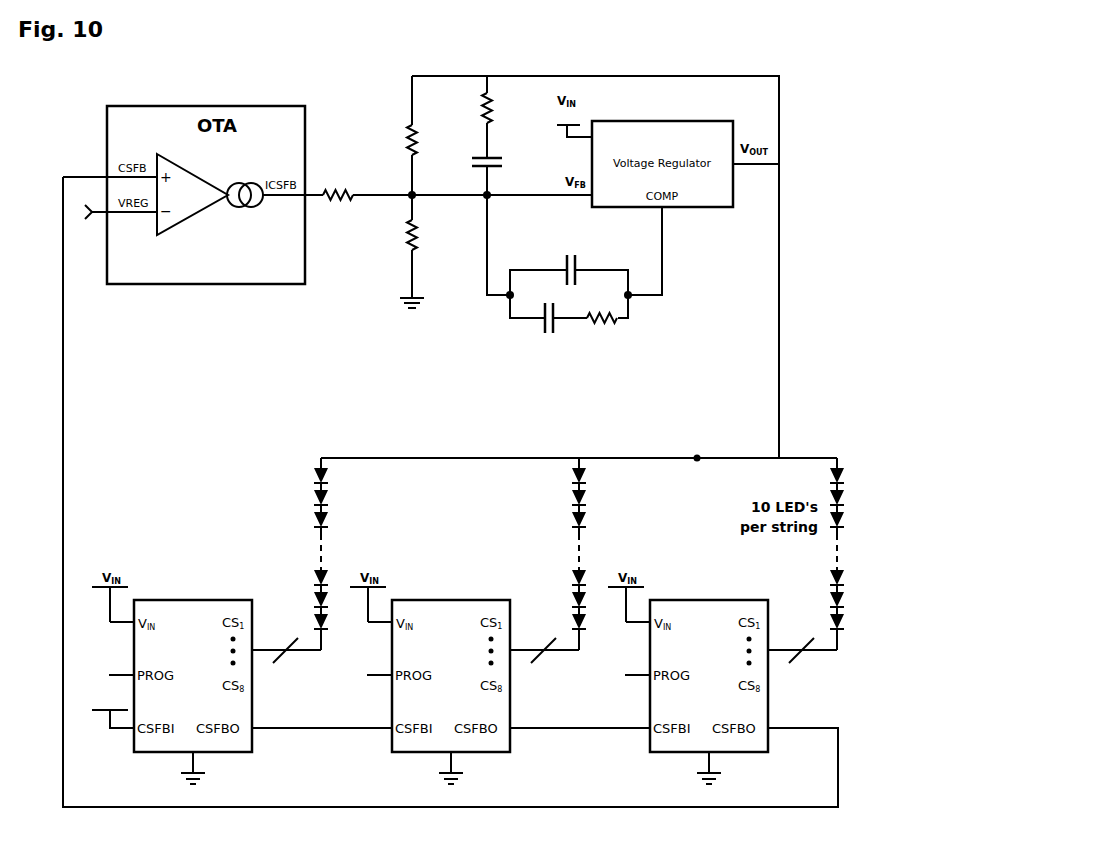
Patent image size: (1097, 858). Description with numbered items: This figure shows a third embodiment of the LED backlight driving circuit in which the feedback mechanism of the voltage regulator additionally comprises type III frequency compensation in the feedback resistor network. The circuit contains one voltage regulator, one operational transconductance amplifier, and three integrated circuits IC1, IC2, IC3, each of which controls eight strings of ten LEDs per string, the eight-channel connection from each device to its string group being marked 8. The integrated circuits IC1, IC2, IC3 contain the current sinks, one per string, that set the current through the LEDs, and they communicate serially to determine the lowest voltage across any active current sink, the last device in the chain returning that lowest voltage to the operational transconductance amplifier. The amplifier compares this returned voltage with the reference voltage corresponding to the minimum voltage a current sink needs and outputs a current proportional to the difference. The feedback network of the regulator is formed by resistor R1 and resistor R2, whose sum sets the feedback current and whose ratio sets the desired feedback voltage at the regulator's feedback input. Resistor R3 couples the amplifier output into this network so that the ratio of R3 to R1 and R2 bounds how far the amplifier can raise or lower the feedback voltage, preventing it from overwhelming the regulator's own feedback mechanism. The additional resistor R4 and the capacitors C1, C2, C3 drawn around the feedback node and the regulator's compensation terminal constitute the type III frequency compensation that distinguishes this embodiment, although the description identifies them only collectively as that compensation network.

The feedback resistor R1 is at (398, 140).
The feedback resistor R2 is at (425, 235).
The OTA output resistor R3 is at (338, 208).
The resistor R4 is at (538, 208).
The capacitor C1 is at (497, 165).
The capacitor C2 is at (549, 310).
The capacitor C3 is at (571, 262).
The LED driver IC1 is at (206, 677).
The LED driver IC2 is at (464, 677).
The LED driver IC3 is at (722, 677).
The 8-channel current sink bus 8 is at (543, 642).